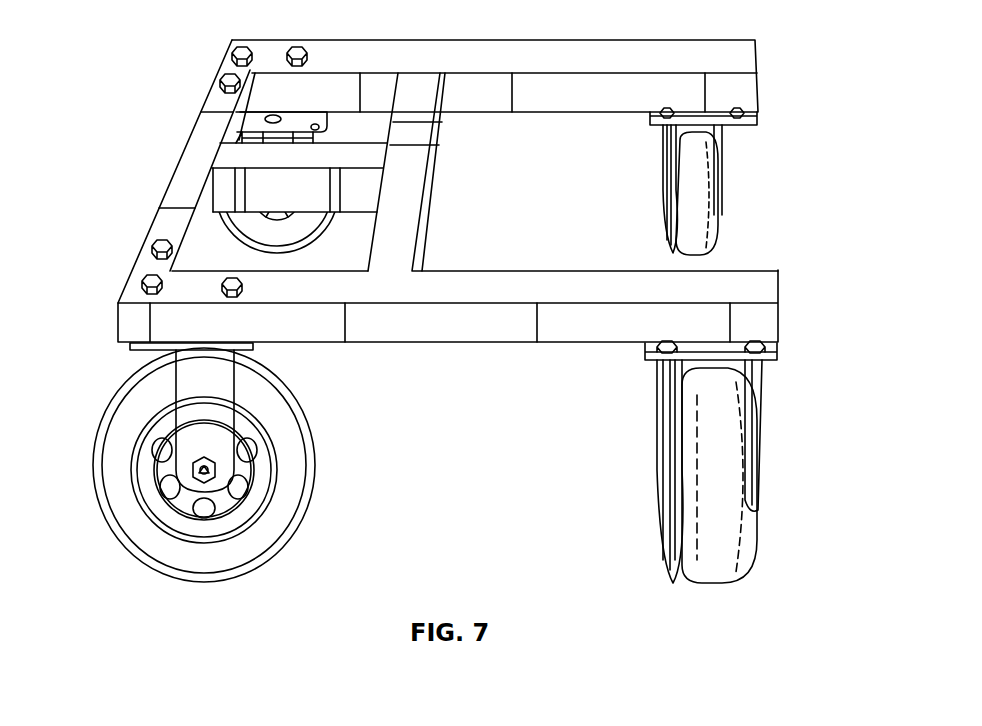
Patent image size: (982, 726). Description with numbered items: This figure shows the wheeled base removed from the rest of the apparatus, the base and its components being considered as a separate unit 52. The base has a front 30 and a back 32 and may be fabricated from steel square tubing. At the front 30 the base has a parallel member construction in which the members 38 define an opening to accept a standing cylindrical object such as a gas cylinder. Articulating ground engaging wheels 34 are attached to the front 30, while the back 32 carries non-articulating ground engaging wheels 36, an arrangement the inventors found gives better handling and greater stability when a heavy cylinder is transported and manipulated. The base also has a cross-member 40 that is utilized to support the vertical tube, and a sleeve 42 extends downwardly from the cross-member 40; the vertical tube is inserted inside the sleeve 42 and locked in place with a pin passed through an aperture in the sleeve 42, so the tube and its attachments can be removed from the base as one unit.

The front 30 is at (477, 171).
The back 32 is at (172, 173).
The articulating ground engaging wheels 34 is at (762, 488).
The non-articulating ground engaging wheels 36 is at (105, 413).
The members 38 is at (727, 57).
The cross-member 40 is at (410, 205).
The sleeve 42 is at (422, 160).
The separate unit 52 is at (788, 190).